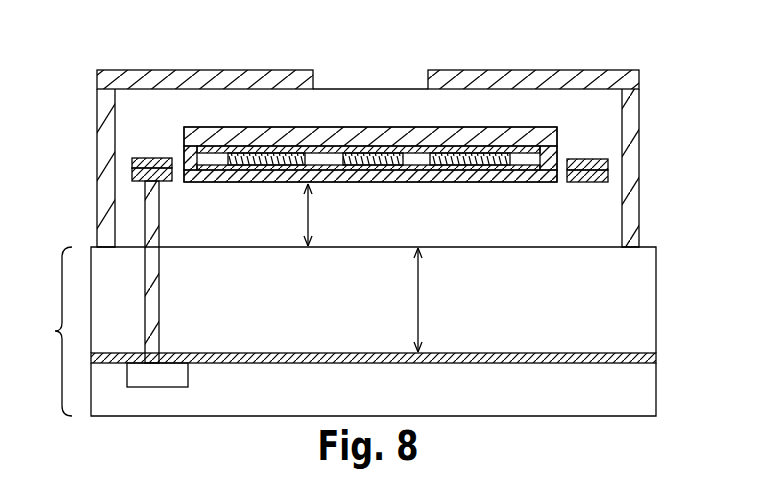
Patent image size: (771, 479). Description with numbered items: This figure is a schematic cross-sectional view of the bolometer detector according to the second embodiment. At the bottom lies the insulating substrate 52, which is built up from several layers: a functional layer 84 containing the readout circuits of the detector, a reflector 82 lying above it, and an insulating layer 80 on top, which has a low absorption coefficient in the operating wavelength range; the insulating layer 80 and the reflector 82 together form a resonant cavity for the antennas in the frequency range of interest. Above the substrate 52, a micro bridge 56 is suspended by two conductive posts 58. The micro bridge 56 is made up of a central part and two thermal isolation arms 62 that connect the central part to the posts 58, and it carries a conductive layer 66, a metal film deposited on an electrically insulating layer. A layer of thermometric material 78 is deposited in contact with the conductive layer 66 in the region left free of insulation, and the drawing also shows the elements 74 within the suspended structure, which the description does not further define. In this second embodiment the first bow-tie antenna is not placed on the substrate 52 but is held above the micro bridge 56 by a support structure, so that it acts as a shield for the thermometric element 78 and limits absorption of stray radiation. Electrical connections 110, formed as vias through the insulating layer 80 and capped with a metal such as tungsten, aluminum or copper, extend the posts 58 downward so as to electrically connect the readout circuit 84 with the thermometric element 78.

The insulating substrate 52 is at (43, 331).
The micro bridge 56 is at (387, 103).
The conductive posts 58 is at (150, 228).
The thermal isolation arms 62 is at (145, 157).
The conductive layer 66 is at (410, 180).
The sensor elements 74 is at (468, 158).
The layer of thermometric material 78 is at (343, 138).
The insulating layer 80 is at (620, 298).
The reflector 82 is at (656, 359).
The functional layer 84 is at (637, 395).
The electrical connections 110 is at (155, 283).